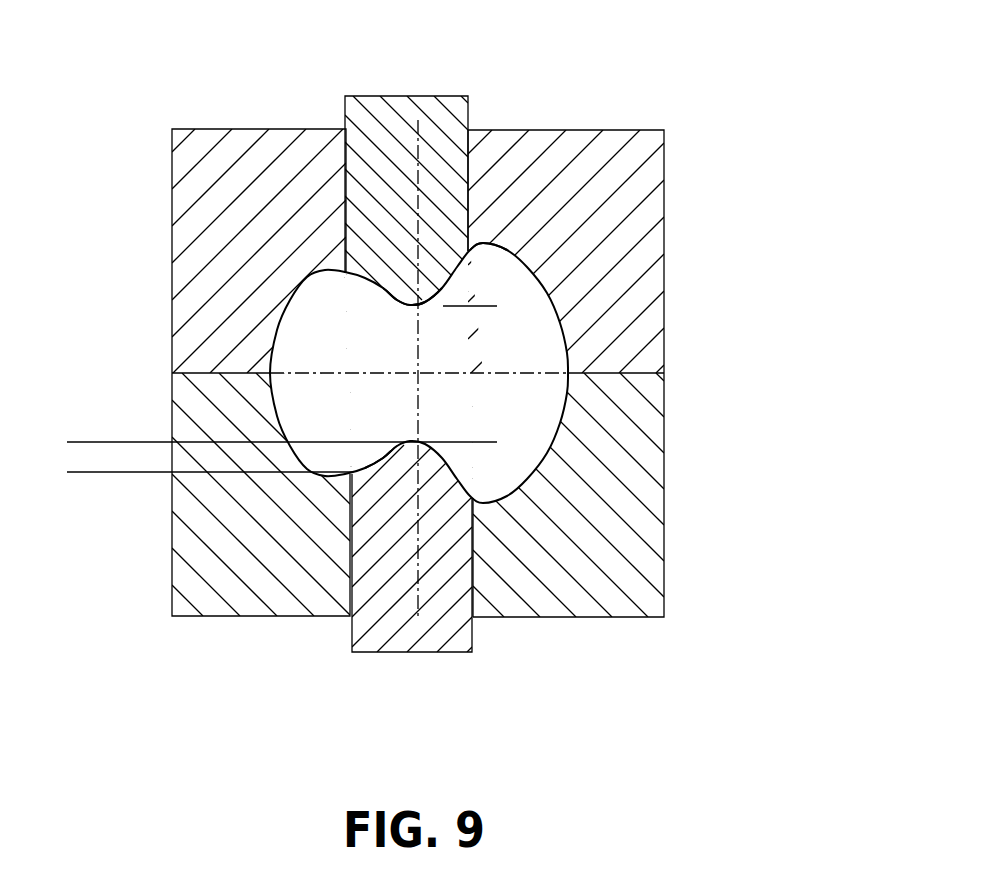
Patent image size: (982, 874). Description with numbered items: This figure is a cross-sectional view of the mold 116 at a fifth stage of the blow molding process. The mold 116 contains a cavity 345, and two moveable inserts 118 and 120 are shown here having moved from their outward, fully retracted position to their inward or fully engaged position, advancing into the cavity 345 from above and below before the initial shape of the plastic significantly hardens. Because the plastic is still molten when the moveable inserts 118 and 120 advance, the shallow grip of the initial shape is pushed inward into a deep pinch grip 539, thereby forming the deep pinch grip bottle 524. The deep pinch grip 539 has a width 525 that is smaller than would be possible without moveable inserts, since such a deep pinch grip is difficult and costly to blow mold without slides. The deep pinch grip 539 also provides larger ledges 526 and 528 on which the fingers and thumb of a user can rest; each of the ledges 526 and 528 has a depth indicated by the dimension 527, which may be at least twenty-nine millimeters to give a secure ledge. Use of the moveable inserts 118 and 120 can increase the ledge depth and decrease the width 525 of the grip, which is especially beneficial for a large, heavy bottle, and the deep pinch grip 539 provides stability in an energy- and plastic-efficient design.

The mold 116 is at (664, 242).
The moveable insert 118 is at (393, 96).
The moveable insert 120 is at (477, 636).
The cavity 345 is at (528, 268).
The deep pinch grip bottle 524 is at (484, 236).
The width 525 is at (481, 440).
The ledge 526 is at (392, 303).
The dimension 527 is at (87, 385).
The ledge 528 is at (383, 458).
The deep pinch grip 539 is at (393, 303).